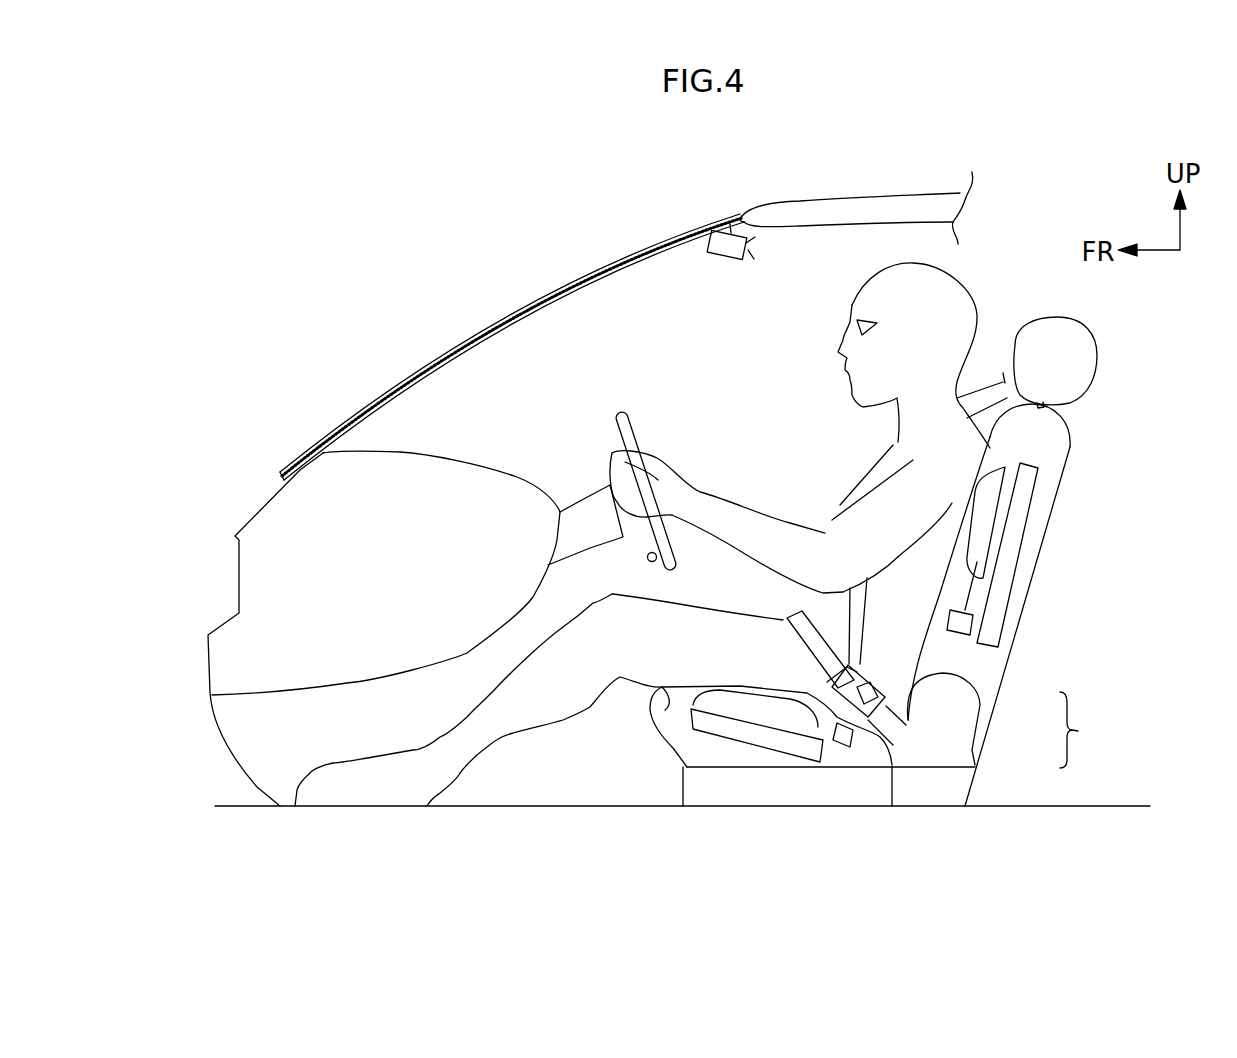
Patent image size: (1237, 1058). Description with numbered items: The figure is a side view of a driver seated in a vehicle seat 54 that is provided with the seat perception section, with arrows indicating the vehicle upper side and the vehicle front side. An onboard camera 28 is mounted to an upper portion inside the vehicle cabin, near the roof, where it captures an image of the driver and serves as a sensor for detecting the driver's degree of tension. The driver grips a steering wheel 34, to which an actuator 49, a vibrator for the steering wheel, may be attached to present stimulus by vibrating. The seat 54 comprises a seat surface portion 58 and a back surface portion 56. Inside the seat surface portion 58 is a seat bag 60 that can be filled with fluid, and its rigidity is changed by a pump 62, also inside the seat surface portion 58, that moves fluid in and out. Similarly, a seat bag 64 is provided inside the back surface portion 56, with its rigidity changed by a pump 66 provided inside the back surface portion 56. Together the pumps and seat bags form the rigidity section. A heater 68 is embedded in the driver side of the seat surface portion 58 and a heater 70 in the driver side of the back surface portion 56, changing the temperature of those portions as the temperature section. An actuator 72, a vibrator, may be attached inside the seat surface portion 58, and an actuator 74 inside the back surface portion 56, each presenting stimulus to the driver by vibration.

The onboard camera 28 is at (713, 253).
The steering wheel 34 is at (674, 561).
The actuator 49 is at (647, 558).
The seat 54 is at (896, 621).
The back surface portion 56 is at (987, 673).
The seat surface portion 58 is at (868, 751).
The seat bag 60 is at (700, 698).
The pump 62 is at (841, 748).
The seat bag 64 is at (1012, 460).
The pump 66 is at (960, 635).
The heater 68 is at (667, 708).
The heater 70 is at (1000, 433).
The actuator 72 is at (764, 749).
The actuator 74 is at (1038, 484).